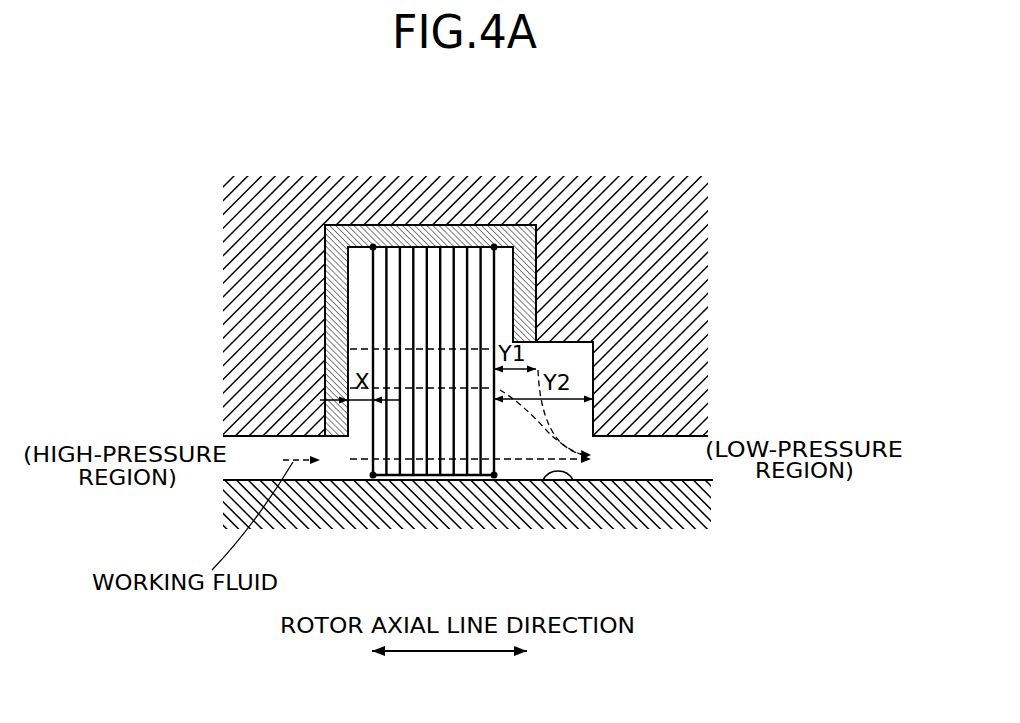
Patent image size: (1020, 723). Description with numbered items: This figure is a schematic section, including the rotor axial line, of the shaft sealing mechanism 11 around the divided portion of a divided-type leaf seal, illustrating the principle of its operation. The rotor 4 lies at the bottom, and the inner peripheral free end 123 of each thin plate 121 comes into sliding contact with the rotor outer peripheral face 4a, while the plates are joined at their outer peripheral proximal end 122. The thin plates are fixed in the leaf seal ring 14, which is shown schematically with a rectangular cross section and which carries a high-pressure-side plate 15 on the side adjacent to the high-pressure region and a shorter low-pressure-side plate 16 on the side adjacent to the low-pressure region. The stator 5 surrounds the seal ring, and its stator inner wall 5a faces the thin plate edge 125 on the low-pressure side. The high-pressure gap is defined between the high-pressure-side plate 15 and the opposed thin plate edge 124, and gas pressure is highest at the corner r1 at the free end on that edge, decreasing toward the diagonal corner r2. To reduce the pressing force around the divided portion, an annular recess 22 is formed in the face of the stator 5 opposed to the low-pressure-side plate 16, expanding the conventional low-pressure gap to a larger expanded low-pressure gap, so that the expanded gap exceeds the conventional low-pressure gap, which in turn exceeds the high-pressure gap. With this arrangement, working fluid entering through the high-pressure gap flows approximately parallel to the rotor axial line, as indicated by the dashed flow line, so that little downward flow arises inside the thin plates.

The rotor 4 is at (466, 532).
The rotor outer peripheral face 4a is at (571, 480).
The stator 5 is at (226, 180).
The stator inner wall 5a is at (594, 343).
The shaft sealing mechanism 11 is at (501, 288).
The leaf seal ring 14 is at (462, 347).
The high-pressure-side plate 15 is at (338, 327).
The low-pressure-side plate 16 is at (536, 313).
The annular recess 22 is at (536, 358).
The thin plate 121 is at (461, 447).
The outer peripheral proximal end 122 is at (475, 223).
The inner peripheral free end 123 is at (437, 478).
The thin plate edge 124 is at (370, 302).
The thin plate edge 125 is at (491, 293).
The corner r1 is at (372, 247).
The corner r2 is at (494, 247).